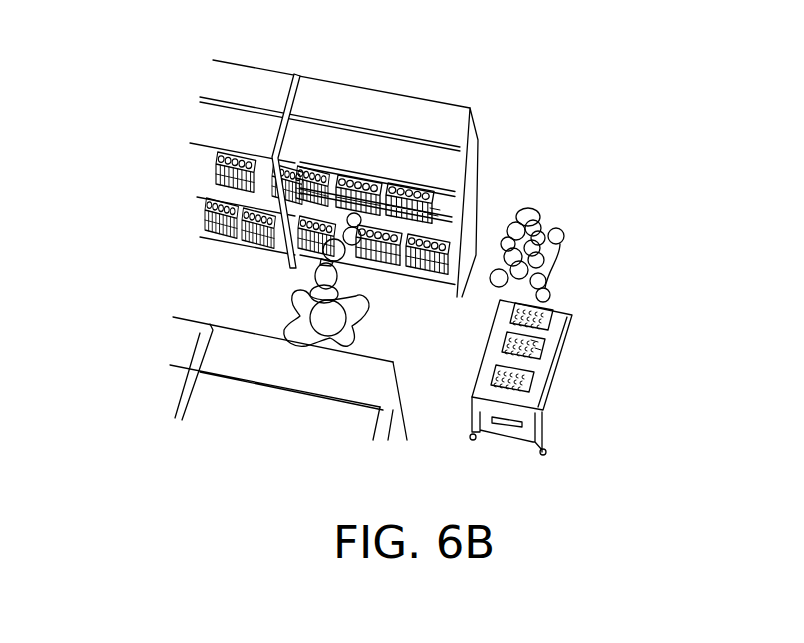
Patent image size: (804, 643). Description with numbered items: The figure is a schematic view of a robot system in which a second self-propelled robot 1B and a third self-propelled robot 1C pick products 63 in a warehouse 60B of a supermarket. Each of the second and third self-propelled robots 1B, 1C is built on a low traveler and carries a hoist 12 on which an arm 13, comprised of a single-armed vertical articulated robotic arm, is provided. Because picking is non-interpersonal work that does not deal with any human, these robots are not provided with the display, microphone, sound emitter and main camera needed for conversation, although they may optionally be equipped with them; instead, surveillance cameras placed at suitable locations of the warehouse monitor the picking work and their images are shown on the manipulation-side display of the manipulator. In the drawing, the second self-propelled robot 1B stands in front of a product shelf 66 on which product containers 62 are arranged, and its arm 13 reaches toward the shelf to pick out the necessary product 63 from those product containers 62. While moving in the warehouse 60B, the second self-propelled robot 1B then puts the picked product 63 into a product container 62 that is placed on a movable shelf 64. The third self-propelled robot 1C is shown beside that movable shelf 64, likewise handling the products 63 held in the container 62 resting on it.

The product shelf 66 is at (388, 93).
The product 63 is at (405, 168).
The product container 62 is at (425, 203).
The third self-propelled robot 1C is at (538, 197).
The movable shelf 64 is at (562, 309).
The second self-propelled robot 1B is at (314, 279).
The arm 13 is at (350, 273).
The hoist 12 is at (352, 291).
The warehouse 60B is at (460, 344).